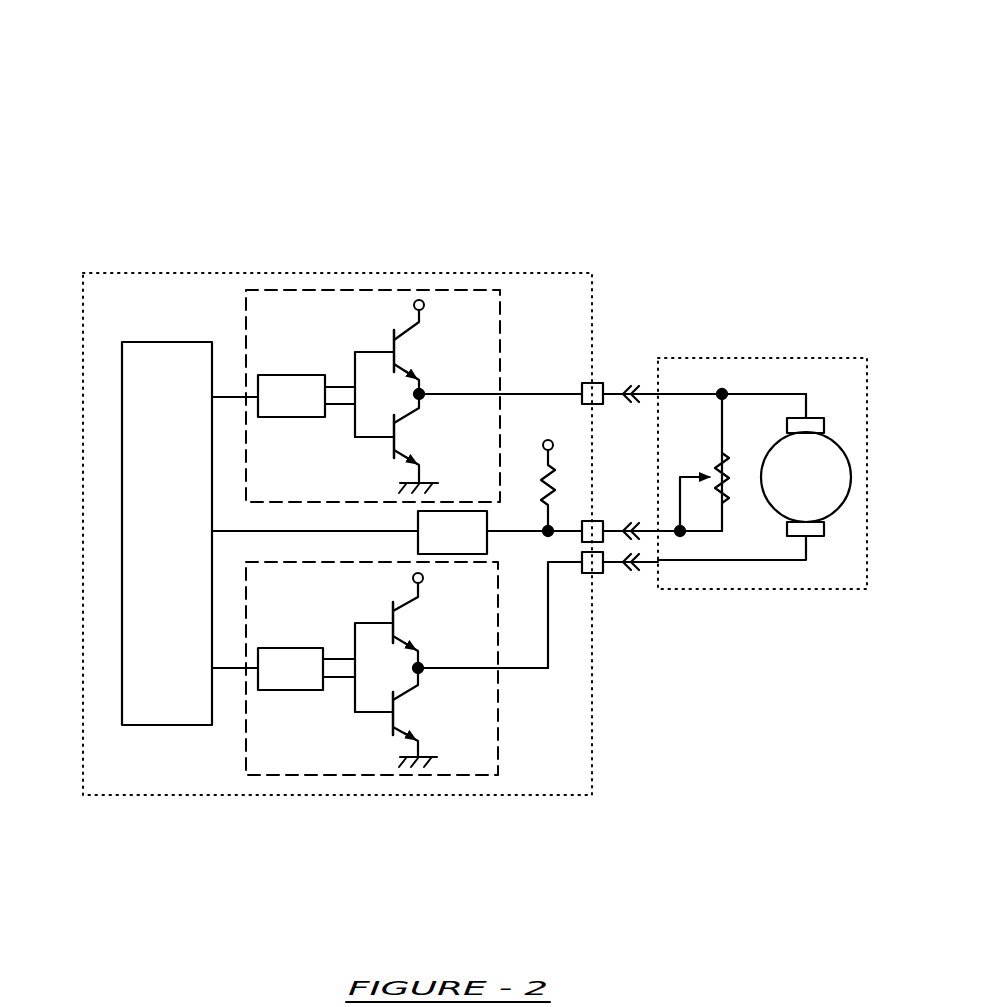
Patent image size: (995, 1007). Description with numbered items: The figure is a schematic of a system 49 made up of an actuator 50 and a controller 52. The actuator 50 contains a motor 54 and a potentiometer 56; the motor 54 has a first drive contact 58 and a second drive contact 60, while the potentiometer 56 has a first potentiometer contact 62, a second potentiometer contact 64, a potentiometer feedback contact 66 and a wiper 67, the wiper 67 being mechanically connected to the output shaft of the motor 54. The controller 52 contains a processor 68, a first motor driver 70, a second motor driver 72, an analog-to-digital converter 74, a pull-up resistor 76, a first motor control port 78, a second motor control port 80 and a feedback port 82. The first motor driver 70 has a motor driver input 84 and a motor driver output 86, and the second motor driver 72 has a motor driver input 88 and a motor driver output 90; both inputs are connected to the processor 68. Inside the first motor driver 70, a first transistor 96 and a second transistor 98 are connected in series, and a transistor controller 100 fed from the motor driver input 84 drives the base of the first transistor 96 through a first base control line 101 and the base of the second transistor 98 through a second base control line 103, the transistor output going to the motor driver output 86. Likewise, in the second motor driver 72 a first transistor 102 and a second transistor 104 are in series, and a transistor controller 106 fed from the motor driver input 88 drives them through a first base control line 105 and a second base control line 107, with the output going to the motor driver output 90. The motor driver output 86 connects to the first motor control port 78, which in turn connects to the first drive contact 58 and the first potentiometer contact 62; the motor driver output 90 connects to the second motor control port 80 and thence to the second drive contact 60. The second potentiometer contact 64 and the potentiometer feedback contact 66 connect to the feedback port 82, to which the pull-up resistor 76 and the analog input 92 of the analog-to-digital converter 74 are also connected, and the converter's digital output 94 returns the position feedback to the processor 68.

The system 49 is at (742, 152).
The actuator 50 is at (865, 358).
The controller 52 is at (593, 273).
The motor 54 is at (833, 471).
The potentiometer 56 is at (735, 486).
The first drive contact 58 is at (808, 407).
The second drive contact 60 is at (807, 548).
The first potentiometer contact 62 is at (737, 391).
The second potentiometer contact 64 is at (686, 535).
The potentiometer feedback contact 66 is at (684, 536).
The wiper 67 is at (697, 472).
The processor 68 is at (150, 367).
The first motor driver 70 is at (246, 290).
The second motor driver 72 is at (246, 776).
The analog-to-digital converter 74 is at (468, 545).
The pull-up resistor 76 is at (551, 488).
The first motor control port 78 is at (608, 383).
The second motor control port 80 is at (612, 560).
The feedback port 82 is at (603, 541).
The motor driver input 84 is at (247, 395).
The motor driver output 86 is at (502, 394).
The motor driver input 88 is at (240, 672).
The motor driver output 90 is at (498, 670).
The analog input 92 is at (518, 533).
The digital output 94 is at (335, 534).
The first transistor 96 is at (402, 317).
The second transistor 98 is at (394, 403).
The transistor controller 100 is at (304, 410).
The first base control line 101 is at (355, 370).
The first transistor 102 is at (413, 622).
The second base control line 103 is at (355, 425).
The second transistor 104 is at (416, 712).
The first base control line 105 is at (352, 637).
The transistor controller 106 is at (303, 683).
The second base control line 107 is at (350, 692).